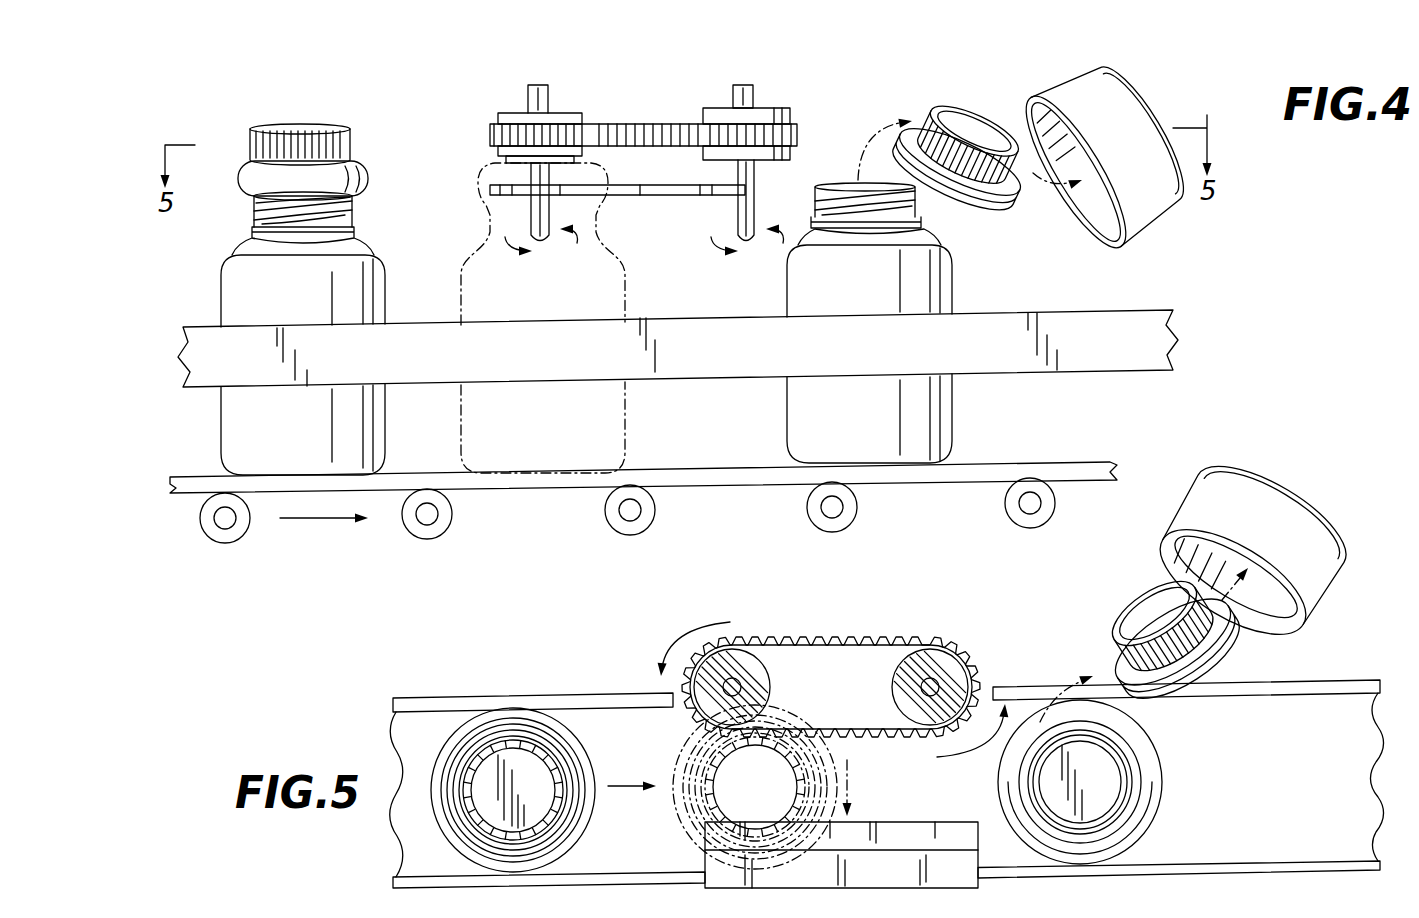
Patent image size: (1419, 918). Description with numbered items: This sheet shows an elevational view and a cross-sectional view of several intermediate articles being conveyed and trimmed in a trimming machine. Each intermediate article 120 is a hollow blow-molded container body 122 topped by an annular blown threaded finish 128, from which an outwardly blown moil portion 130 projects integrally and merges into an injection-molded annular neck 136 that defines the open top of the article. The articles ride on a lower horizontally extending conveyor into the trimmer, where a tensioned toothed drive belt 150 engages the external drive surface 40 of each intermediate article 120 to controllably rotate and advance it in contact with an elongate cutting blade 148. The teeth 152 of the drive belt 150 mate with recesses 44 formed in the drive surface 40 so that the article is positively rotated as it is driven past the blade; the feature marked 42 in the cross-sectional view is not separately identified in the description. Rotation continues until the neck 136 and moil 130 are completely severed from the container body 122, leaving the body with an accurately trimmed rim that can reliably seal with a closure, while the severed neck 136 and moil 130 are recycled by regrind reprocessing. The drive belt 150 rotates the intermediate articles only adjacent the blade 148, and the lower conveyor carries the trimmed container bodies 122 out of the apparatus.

In FIG. 4, the external drive surface 40 is at (250, 143).
In FIG. 5, the external drive surface 40 is at (495, 837).
In FIG. 5, the gripping teeth 42 is at (485, 758).
In FIG. 5, the recesses 44 is at (517, 750).
In FIG. 4, the intermediate article 120 is at (385, 290).
In FIG. 5, the intermediate article 120 is at (565, 848).
In FIG. 4, the container body 122 is at (955, 422).
In FIG. 5, the container body 122 is at (1140, 828).
In FIG. 4, the annular blown threaded finish 128 is at (354, 208).
In FIG. 4, the moil portion 130 is at (365, 176).
In FIG. 5, the moil portion 130 is at (1140, 695).
In FIG. 4, the annular neck 136 is at (290, 128).
In FIG. 5, the annular neck 136 is at (557, 765).
In FIG. 4, the cutting blade 148 is at (626, 196).
In FIG. 5, the cutting blade 148 is at (925, 822).
In FIG. 4, the drive belt 150 is at (616, 132).
In FIG. 5, the drive belt 150 is at (852, 650).
In FIG. 5, the teeth 152 is at (800, 640).